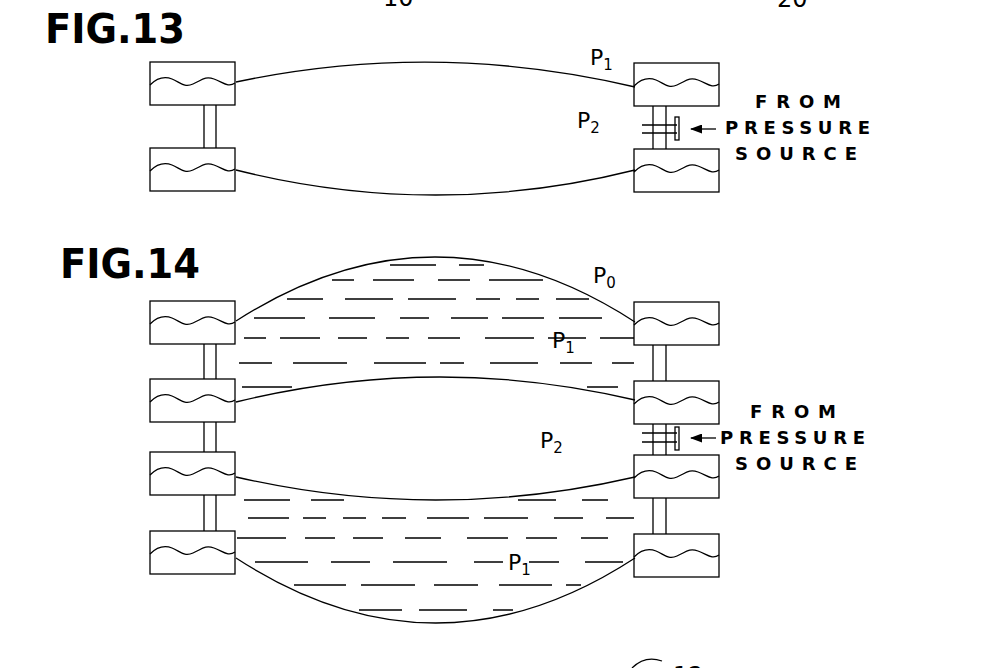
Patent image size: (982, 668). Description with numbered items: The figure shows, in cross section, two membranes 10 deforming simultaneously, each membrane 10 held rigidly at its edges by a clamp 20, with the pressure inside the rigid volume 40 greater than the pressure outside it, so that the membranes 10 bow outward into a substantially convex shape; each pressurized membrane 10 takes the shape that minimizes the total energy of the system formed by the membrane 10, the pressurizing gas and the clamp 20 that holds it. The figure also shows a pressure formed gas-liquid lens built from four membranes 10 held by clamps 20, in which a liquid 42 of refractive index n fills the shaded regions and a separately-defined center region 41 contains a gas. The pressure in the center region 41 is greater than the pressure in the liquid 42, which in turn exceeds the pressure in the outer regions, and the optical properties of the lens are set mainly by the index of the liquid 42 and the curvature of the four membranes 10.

In FIG. 13, the membrane 10 is at (484, 46).
In FIG. 14, the membrane 10 is at (403, 382).
In FIG. 13, the clamp 20 is at (150, 70).
In FIG. 14, the clamp 20 is at (150, 306).
In FIG. 13, the rigid volume 40 is at (330, 139).
In FIG. 14, the center region 41 is at (287, 433).
In FIG. 14, the liquid 42 is at (328, 320).